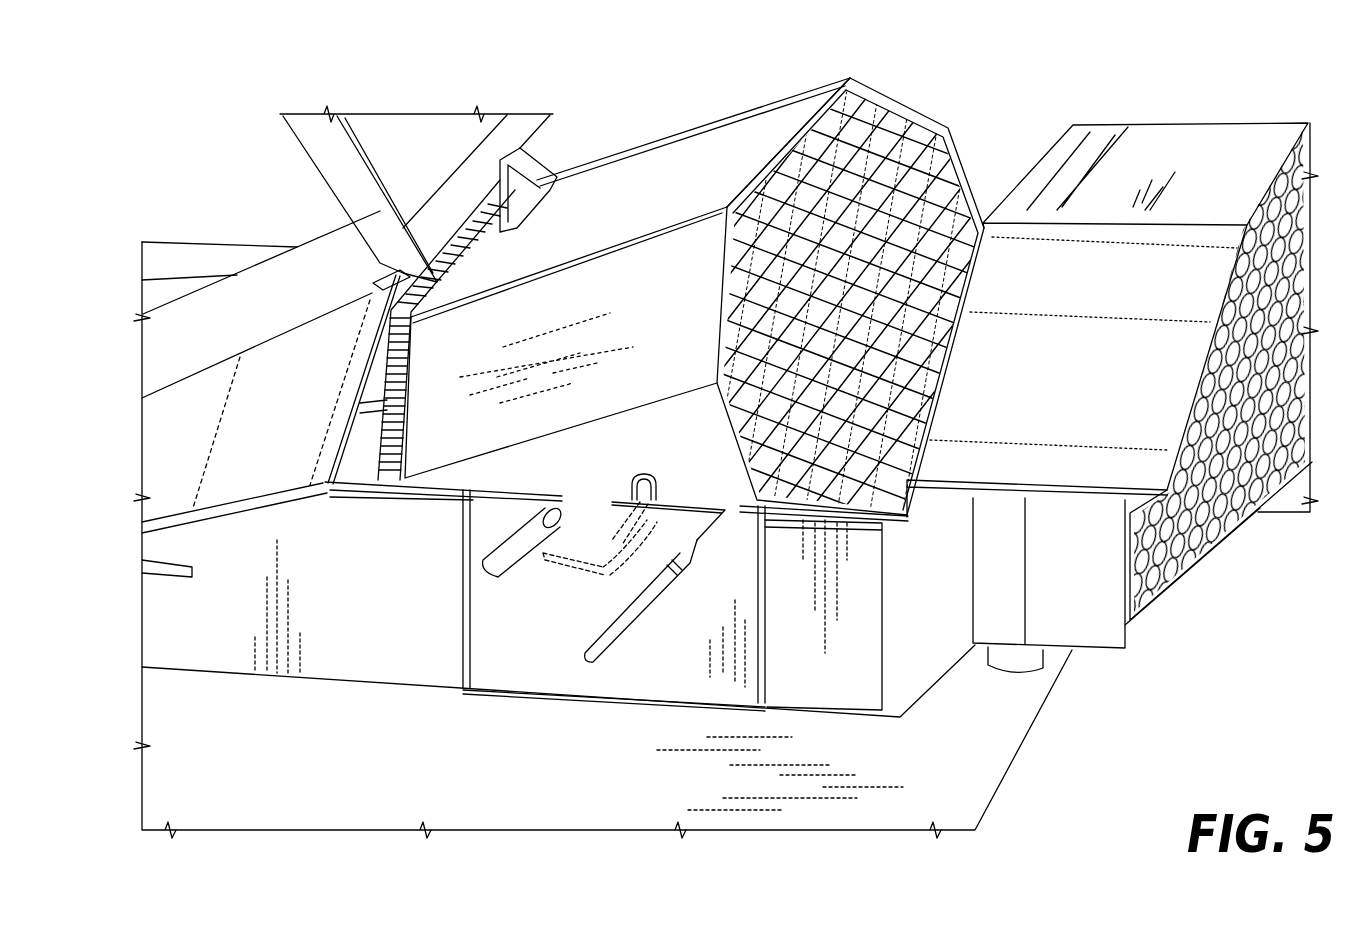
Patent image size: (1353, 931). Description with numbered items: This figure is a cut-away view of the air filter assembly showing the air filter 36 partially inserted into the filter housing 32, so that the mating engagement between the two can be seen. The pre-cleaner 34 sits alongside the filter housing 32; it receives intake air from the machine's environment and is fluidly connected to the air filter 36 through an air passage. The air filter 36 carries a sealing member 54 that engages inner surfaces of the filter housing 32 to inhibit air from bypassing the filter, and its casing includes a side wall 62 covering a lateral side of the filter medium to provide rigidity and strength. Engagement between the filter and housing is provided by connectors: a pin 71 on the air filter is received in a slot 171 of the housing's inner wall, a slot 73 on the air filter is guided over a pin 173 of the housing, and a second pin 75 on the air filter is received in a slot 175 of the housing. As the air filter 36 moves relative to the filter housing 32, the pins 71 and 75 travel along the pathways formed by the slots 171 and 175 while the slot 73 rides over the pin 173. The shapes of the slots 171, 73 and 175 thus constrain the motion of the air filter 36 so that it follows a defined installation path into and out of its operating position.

The filter housing 32 is at (273, 273).
The pre-cleaner 34 is at (1150, 620).
The air filter 36 is at (744, 333).
The sealing member 54 is at (547, 177).
The side wall 62 is at (681, 443).
The pin 71 is at (562, 530).
The slot 73 is at (628, 530).
The pin 75 is at (667, 578).
The slot 171 is at (510, 570).
The pin 173 is at (603, 562).
The slot 175 is at (620, 595).